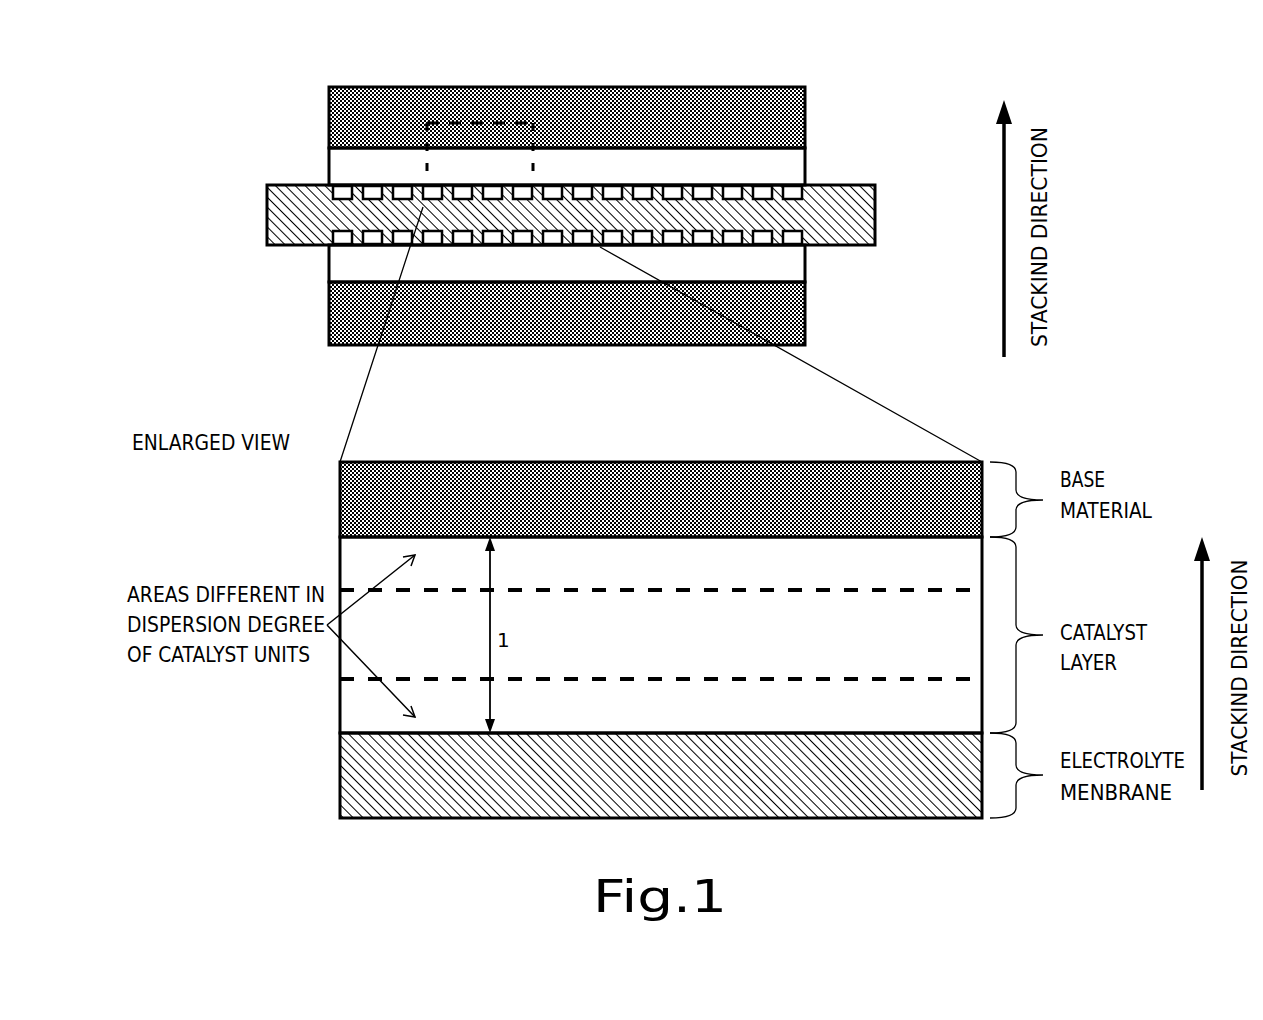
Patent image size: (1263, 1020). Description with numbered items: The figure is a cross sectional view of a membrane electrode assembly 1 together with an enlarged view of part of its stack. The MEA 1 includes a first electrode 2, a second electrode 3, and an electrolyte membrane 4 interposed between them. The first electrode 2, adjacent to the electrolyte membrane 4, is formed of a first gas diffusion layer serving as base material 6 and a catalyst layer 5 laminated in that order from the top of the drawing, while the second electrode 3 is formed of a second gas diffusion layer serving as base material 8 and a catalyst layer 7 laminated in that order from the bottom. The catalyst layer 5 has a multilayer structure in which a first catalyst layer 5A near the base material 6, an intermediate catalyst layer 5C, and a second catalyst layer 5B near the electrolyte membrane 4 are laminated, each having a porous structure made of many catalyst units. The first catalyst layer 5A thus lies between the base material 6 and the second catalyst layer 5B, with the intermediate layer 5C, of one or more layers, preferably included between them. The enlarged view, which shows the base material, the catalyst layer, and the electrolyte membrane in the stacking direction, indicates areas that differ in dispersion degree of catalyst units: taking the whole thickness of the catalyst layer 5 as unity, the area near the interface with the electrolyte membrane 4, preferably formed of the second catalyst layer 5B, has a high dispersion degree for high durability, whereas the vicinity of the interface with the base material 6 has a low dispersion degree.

The membrane electrode assembly 1 is at (621, 377).
The first electrode 2 is at (624, 136).
The second electrode 3 is at (625, 295).
The electrolyte membrane 4 is at (617, 377).
The catalyst layer 5 is at (780, 163).
The first catalyst layer 5A is at (357, 555).
The second catalyst layer 5B is at (658, 232).
The intermediate catalyst layer 5C is at (661, 634).
The first gas diffusion layer 6 is at (797, 115).
The catalyst layer 7 is at (787, 268).
The second gas diffusion layer 8 is at (790, 320).